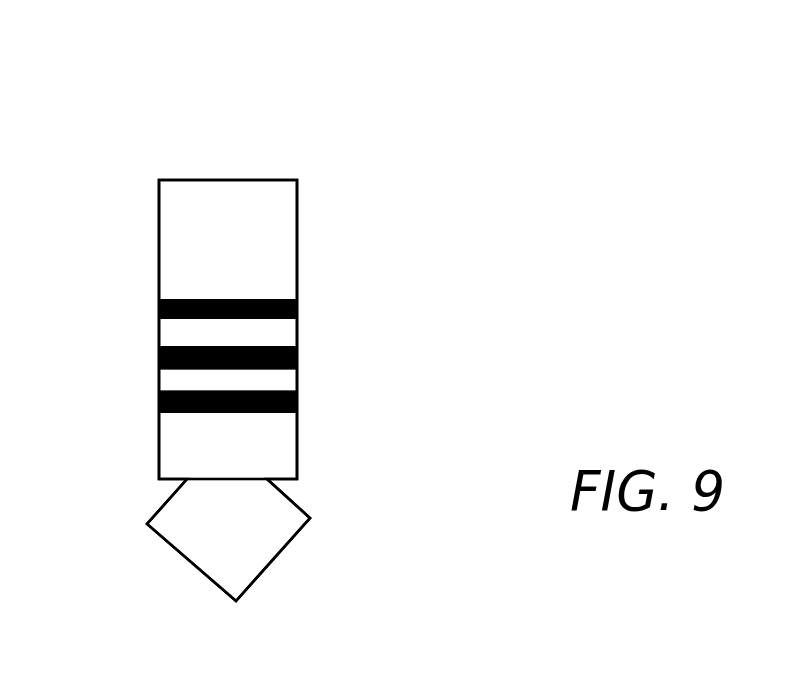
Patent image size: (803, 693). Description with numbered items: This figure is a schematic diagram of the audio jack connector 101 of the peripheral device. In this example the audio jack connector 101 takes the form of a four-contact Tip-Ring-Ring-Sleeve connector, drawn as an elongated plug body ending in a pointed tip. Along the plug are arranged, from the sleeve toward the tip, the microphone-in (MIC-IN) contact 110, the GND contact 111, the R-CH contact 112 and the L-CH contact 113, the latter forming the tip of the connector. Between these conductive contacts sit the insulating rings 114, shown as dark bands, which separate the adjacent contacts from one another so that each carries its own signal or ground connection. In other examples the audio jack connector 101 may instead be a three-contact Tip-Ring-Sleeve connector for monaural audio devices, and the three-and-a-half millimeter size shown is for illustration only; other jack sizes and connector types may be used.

The audio jack connector 101 is at (183, 76).
The microphone-in (MIC-IN) contact 110 is at (174, 267).
The GND contact 111 is at (176, 337).
The R-CH contact 112 is at (285, 378).
The L-CH contact 113 is at (259, 549).
The insulating rings 114 is at (157, 407).